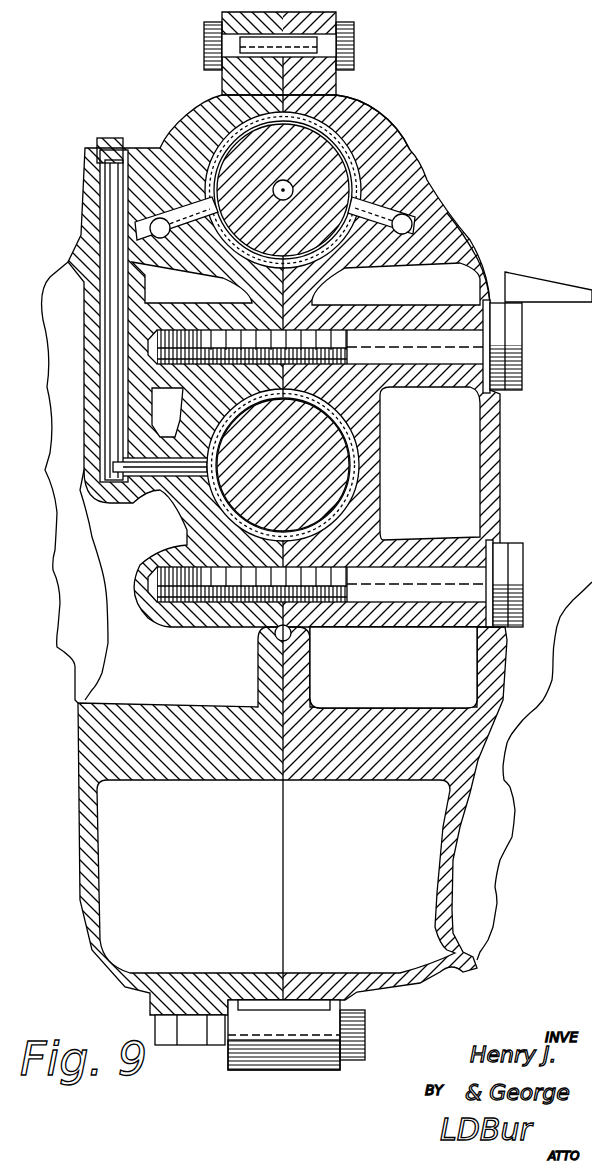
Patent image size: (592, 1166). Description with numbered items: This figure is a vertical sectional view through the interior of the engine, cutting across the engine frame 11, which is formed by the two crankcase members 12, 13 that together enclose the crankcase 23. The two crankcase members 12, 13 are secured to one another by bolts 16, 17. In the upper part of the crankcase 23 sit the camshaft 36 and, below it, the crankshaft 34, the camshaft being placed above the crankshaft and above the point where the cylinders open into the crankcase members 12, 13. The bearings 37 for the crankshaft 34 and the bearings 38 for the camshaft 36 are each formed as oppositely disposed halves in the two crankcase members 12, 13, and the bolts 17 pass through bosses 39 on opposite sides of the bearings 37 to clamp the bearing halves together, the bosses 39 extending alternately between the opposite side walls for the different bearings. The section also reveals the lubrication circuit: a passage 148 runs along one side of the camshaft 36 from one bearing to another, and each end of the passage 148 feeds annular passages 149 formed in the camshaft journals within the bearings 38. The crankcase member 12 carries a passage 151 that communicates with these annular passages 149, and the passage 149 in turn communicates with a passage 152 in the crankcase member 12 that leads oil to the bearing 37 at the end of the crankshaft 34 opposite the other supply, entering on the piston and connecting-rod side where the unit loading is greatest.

The engine frame 11 is at (471, 243).
The crankcase member 12 is at (78, 810).
The crankcase member 13 is at (410, 182).
The bolts 16 is at (208, 40).
The bolts 17 is at (500, 295).
The crankcase 23 is at (110, 870).
The crankshaft 34 is at (360, 446).
The camshaft 36 is at (335, 170).
The bearings 37 is at (388, 490).
The bearings 38 is at (228, 280).
The bosses 39 is at (428, 296).
The passage 148 is at (412, 222).
The annular passages 149 is at (337, 115).
The passage 151 is at (150, 230).
The passage 152 is at (112, 285).